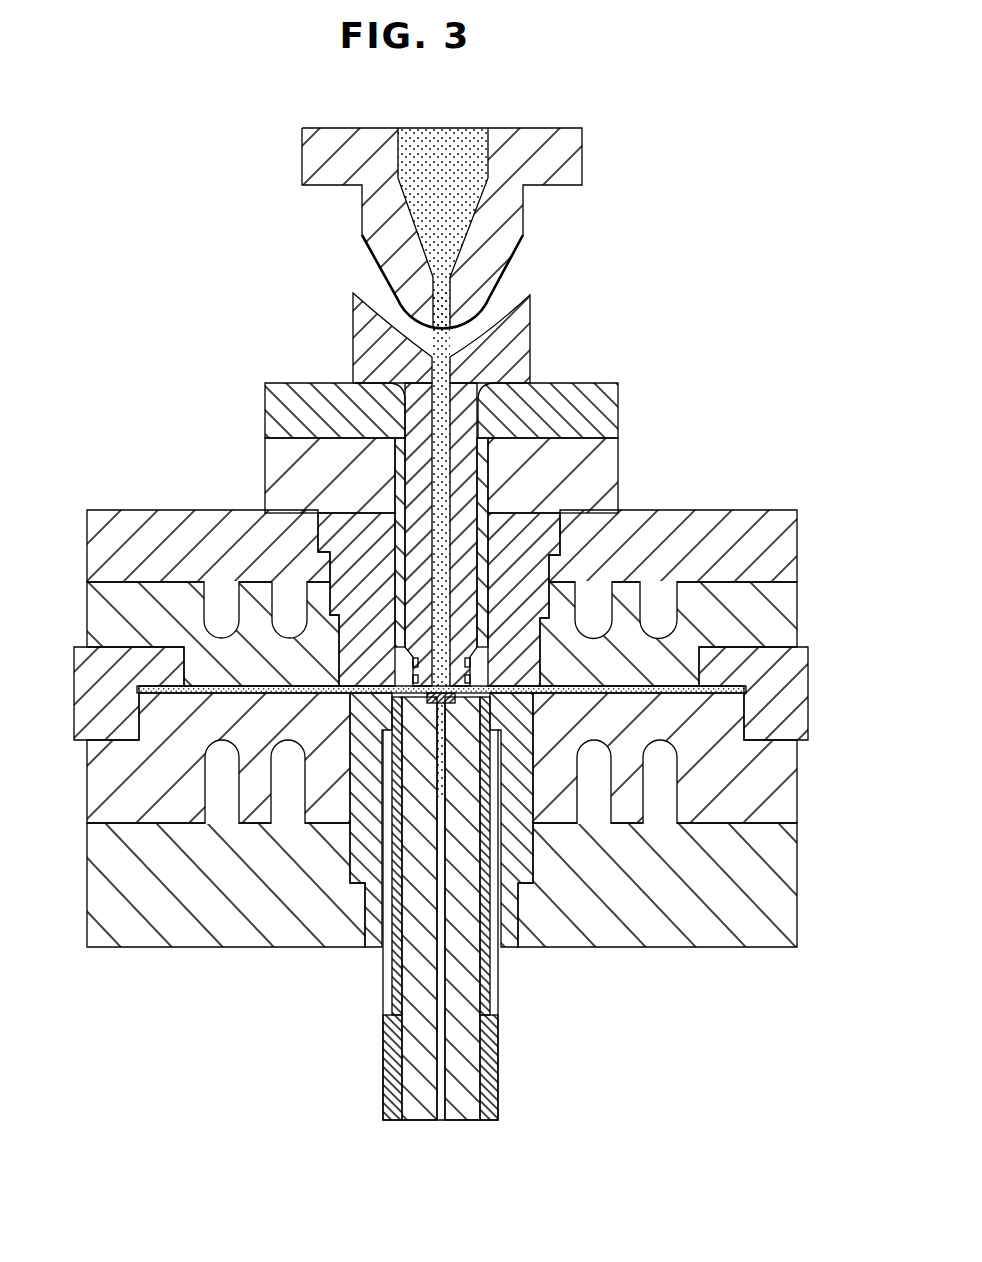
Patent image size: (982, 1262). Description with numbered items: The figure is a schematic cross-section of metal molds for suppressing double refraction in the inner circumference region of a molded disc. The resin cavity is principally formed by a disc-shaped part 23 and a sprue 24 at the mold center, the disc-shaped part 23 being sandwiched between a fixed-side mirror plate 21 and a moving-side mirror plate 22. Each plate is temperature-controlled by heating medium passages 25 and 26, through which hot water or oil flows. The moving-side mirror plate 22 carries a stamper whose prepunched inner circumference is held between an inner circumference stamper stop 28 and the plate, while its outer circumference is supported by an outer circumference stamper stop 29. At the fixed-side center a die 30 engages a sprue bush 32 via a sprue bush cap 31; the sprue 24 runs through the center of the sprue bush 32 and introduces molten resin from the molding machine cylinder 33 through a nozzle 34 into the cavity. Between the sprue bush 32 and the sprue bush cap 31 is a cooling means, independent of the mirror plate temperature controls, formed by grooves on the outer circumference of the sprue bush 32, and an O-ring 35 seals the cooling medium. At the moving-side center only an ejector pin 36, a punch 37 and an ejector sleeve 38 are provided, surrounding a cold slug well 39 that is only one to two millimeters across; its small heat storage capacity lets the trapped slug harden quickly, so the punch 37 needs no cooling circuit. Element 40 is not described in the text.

The fixed-side mirror plate 21 is at (97, 613).
The moving-side mirror plate 22 is at (103, 785).
The disc-shaped part 23 is at (190, 620).
The sprue 24 is at (460, 437).
The heating medium passages 25 is at (221, 610).
The heating medium passages 26 is at (208, 795).
The inner circumference stamper stop 28 is at (362, 795).
The outer circumference stamper stop 29 is at (92, 702).
The die 30 is at (347, 520).
The sprue bush cap 31 is at (545, 425).
The sprue bush 32 is at (520, 355).
The molding machine cylinder 33 is at (572, 157).
The nozzle 34 is at (484, 288).
The O-ring 35 is at (265, 482).
The ejector pin 36 is at (442, 1105).
The punch 37 is at (420, 1000).
The ejector sleeve 38 is at (487, 1043).
The cold slug well 39 is at (353, 947).
The nozzle tip seal 40 is at (427, 699).